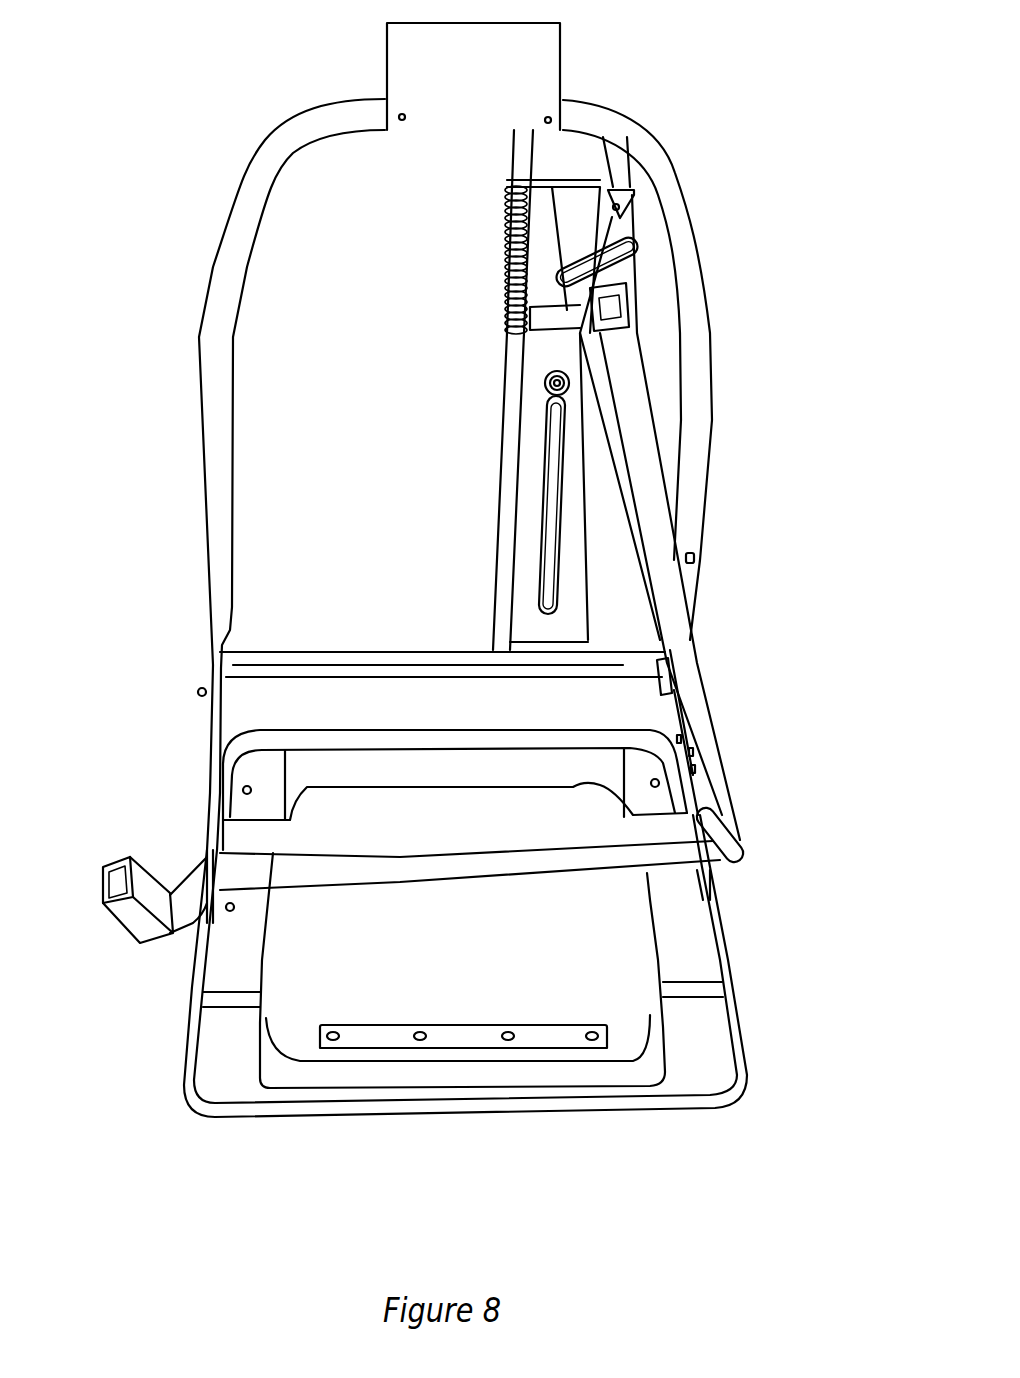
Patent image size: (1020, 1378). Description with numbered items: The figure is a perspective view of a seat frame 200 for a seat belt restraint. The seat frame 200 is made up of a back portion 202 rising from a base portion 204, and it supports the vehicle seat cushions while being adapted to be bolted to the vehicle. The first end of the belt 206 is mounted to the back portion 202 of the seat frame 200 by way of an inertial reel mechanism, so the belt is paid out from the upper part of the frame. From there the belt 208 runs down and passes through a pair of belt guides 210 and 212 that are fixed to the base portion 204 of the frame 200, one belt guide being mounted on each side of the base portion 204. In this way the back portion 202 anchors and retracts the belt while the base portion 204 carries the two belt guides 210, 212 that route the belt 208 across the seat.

The seat frame 200 is at (693, 153).
The back portion 202 is at (697, 323).
The base portion 204 is at (690, 967).
The first end of the belt 206 is at (545, 272).
The belt 208 is at (665, 545).
The belt guide 210 is at (740, 852).
The belt guide 212 is at (204, 862).